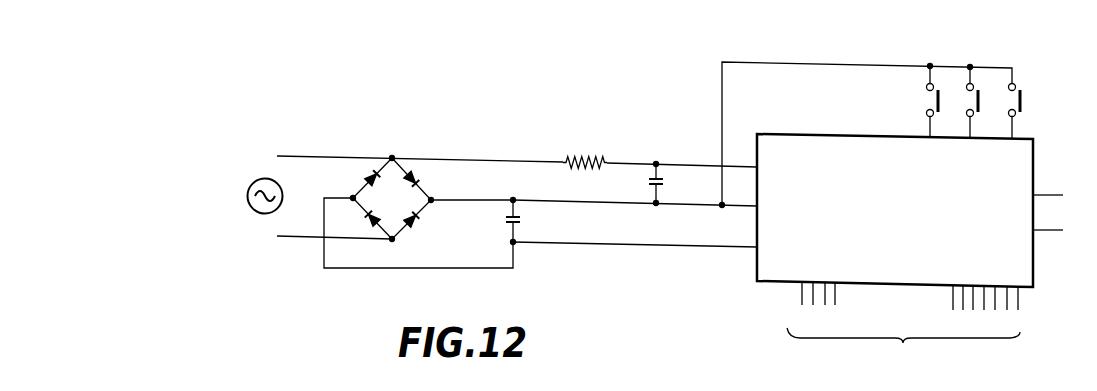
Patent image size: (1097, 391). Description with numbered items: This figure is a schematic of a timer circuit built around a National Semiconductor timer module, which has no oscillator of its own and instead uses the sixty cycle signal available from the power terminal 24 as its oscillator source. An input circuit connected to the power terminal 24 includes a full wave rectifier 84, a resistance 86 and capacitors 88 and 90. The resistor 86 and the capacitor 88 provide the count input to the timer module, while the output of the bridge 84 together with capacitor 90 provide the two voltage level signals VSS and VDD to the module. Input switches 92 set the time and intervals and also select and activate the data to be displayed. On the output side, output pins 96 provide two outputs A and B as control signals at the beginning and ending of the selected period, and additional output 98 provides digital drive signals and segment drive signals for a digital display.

The power terminal 24 is at (290, 156).
The full wave rectifier 84 is at (392, 158).
The resistance 86 is at (598, 161).
The capacitor 88 is at (648, 181).
The capacitor 90 is at (520, 221).
The input switches 92 is at (999, 62).
The output pins 96 is at (1042, 193).
The additional output 98 is at (942, 296).